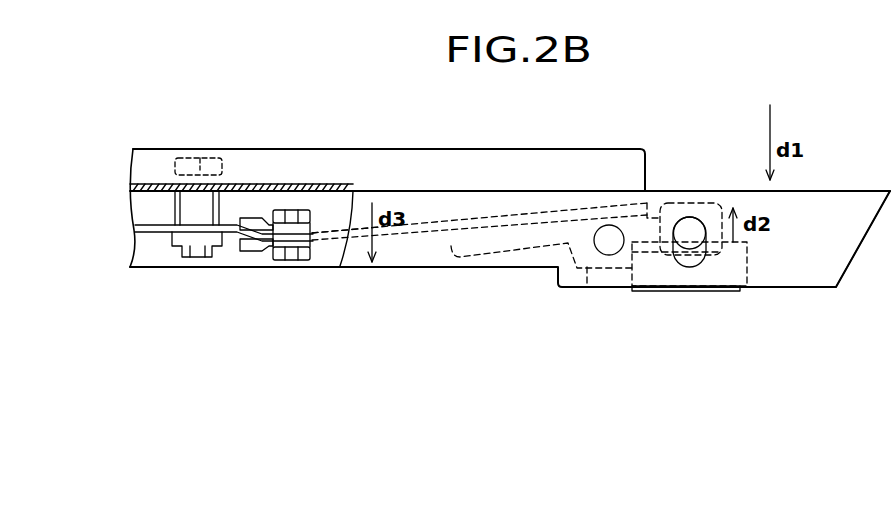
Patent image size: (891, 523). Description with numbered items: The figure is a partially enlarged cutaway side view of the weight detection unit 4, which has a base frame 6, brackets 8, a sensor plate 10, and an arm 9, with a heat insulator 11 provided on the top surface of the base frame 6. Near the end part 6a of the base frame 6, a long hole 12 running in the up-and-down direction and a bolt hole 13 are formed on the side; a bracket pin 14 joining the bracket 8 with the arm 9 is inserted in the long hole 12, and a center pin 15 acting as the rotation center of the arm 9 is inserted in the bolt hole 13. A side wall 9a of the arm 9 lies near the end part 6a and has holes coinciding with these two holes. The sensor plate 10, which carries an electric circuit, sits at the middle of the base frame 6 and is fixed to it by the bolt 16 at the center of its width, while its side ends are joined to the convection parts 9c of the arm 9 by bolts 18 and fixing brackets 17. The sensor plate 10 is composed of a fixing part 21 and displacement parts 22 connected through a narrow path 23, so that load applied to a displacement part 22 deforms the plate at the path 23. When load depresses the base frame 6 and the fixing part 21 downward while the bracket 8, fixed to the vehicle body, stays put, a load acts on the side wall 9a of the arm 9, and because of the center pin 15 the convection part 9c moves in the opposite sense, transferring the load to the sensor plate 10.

The weight detection unit 4 is at (551, 150).
The base frame 6 is at (486, 197).
The end part 6a is at (818, 222).
The bracket 8 is at (730, 292).
The arm 9 is at (430, 241).
The side wall 9a is at (585, 288).
The convection part 9c is at (355, 263).
The sensor plate 10 is at (230, 240).
The heat insulator 11 is at (418, 150).
The long hole 12 is at (693, 268).
The bolt hole 13 is at (613, 244).
The bracket pin 14 is at (690, 226).
The center pin 15 is at (607, 226).
The bolt 16 is at (200, 150).
The fixing bracket 17 is at (338, 266).
The bolt 18 is at (284, 212).
The fixing part 21 is at (176, 256).
The displacement part 22 is at (255, 252).
The path 23 is at (214, 258).